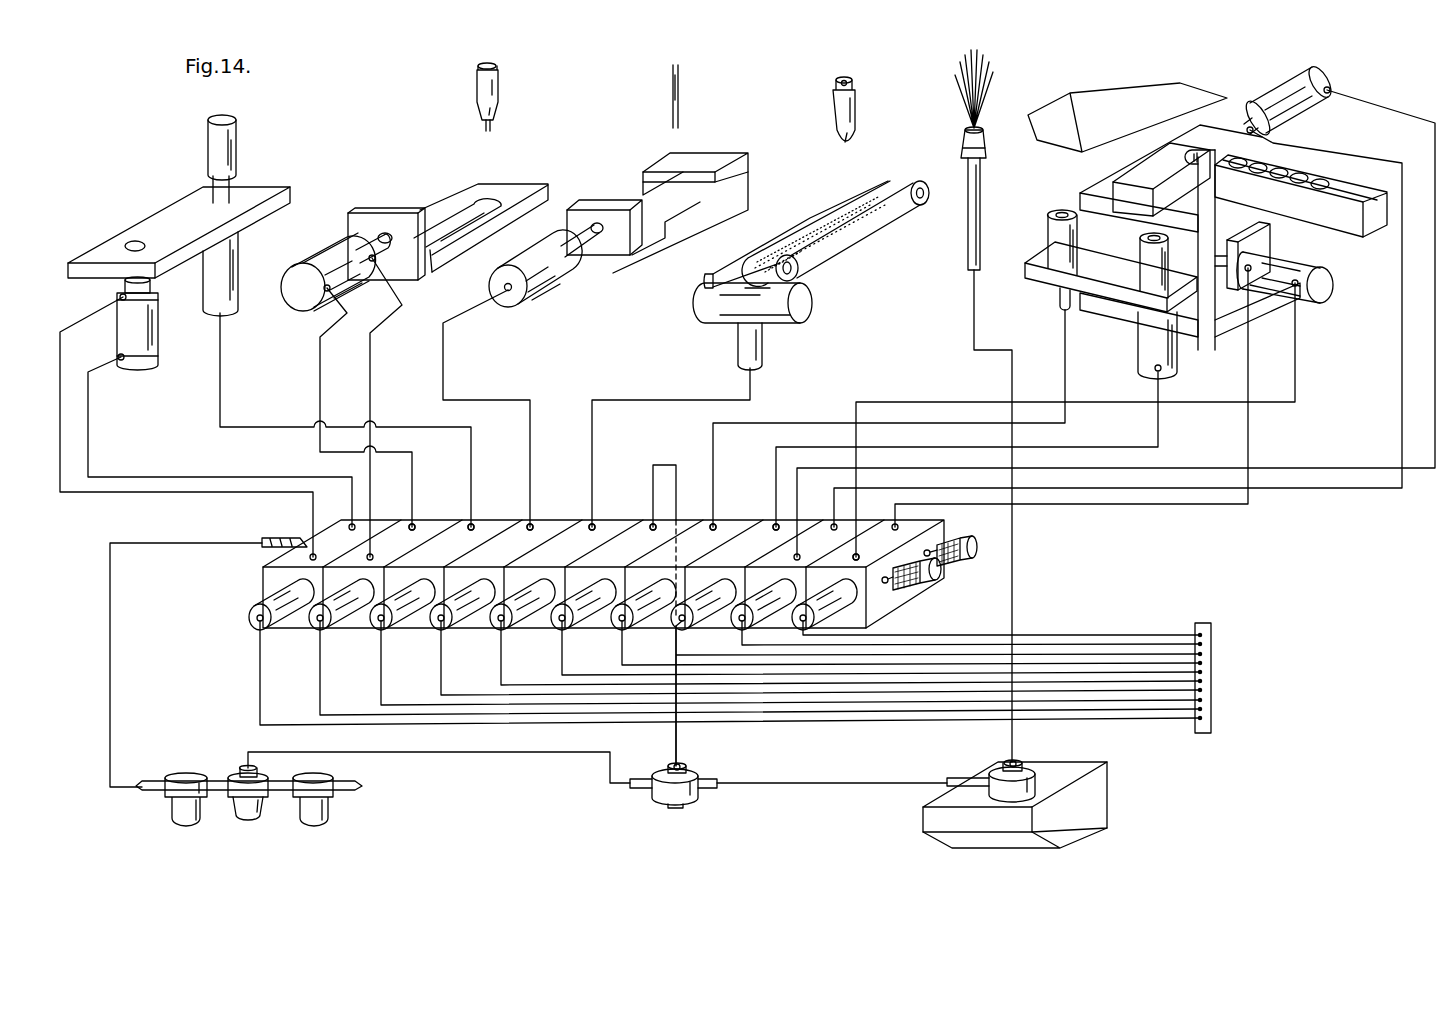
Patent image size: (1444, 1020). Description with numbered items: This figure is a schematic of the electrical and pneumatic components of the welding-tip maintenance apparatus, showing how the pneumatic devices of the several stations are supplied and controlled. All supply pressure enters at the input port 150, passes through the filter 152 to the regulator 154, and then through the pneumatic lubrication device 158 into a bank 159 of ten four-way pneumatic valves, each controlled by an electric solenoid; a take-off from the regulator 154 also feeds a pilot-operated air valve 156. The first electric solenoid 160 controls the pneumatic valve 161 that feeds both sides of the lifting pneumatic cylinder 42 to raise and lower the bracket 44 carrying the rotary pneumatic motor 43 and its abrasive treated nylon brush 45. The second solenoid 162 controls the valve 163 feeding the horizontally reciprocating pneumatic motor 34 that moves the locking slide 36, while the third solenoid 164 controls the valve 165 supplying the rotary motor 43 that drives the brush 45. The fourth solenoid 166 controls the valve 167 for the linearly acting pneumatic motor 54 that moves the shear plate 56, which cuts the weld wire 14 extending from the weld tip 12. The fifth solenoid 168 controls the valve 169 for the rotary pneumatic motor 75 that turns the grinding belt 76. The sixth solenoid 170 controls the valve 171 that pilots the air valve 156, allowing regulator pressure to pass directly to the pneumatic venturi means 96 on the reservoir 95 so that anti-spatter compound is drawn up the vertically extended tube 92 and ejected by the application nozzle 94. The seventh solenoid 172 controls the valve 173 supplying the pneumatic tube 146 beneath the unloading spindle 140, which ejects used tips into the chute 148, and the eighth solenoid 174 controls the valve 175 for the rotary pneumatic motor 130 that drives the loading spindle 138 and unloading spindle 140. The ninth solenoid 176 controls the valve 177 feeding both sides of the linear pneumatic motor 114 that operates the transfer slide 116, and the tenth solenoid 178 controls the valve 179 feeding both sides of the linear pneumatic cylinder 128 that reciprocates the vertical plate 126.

The weld tip 12 is at (505, 96).
The weld wire 14 is at (484, 124).
The horizontally reciprocating pneumatic motor 34 is at (338, 250).
The locking slide 36 is at (503, 186).
The lifting pneumatic cylinder 42 is at (152, 346).
The rotary pneumatic motor 43 is at (240, 302).
The bracket 44 is at (160, 222).
The abrasive treated nylon brush 45 is at (238, 160).
The linearly acting pneumatic motor 54 is at (556, 286).
The shear plate 56 is at (678, 215).
The rotary pneumatic motor 75 is at (804, 305).
The grinding belt 76 is at (845, 212).
The vertically extended tube 92 is at (968, 240).
The application nozzle 94 is at (960, 156).
The reservoir 95 is at (1105, 785).
The pneumatic venturi means 96 is at (1035, 760).
The linear pneumatic motor 114 is at (1283, 100).
The transfer slide 116 is at (1222, 118).
The vertical plate 126 is at (1218, 294).
The linear pneumatic cylinder 128 is at (1316, 305).
The rotary pneumatic motor 130 is at (1147, 350).
The loading spindle 138 is at (1143, 256).
The unloading spindle 140 is at (1050, 232).
The pneumatic tube 146 is at (1060, 300).
The chute 148 is at (1040, 112).
The input port 150 is at (336, 790).
The filter 152 is at (312, 826).
The regulator 154 is at (250, 822).
The pilot-operated air valve 156 is at (685, 790).
The pneumatic lubrication device 158 is at (187, 825).
The bank of ten four-way pneumatic valves 159 is at (241, 597).
The first electric solenoid 160 is at (257, 619).
The pneumatic valve 161 is at (272, 560).
The second solenoid 162 is at (312, 629).
The pneumatic valve 163 is at (457, 492).
The third electric solenoid 164 is at (373, 629).
The pneumatic valve 165 is at (519, 492).
The fourth electric solenoid 166 is at (433, 629).
The pneumatic valve 167 is at (579, 492).
The fifth electric solenoid 168 is at (497, 629).
The pneumatic valve 169 is at (640, 492).
The sixth electric solenoid 170 is at (559, 629).
The pneumatic valve 171 is at (682, 520).
The seventh electric solenoid 172 is at (619, 629).
The pneumatic valve 173 is at (760, 492).
The eighth electric solenoid 174 is at (675, 630).
The pneumatic valve 175 is at (755, 535).
The ninth electric solenoid 176 is at (740, 628).
The pneumatic valve 177 is at (858, 523).
The tenth electric solenoid 178 is at (843, 626).
The pneumatic valve 179 is at (941, 521).